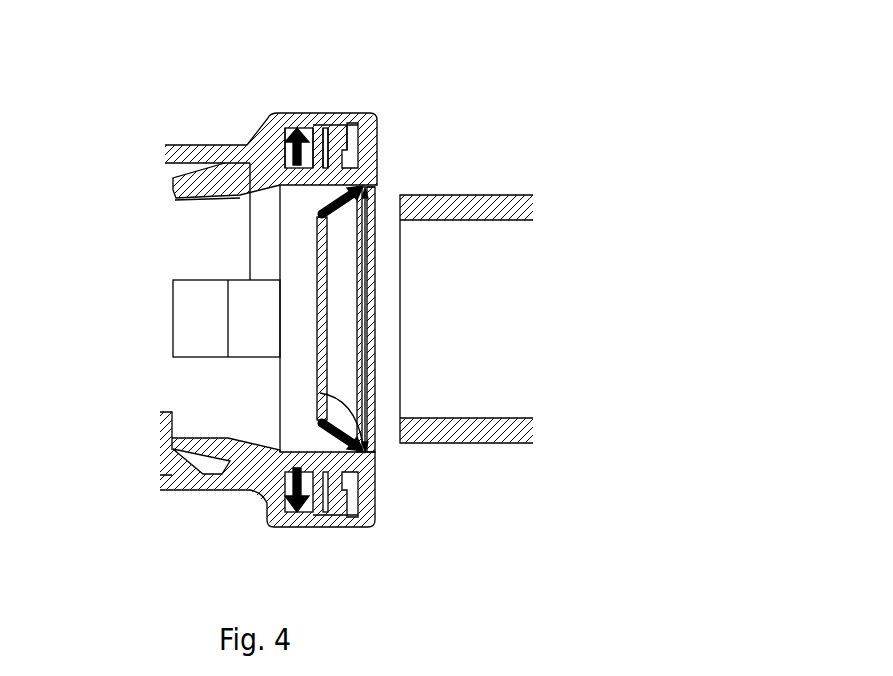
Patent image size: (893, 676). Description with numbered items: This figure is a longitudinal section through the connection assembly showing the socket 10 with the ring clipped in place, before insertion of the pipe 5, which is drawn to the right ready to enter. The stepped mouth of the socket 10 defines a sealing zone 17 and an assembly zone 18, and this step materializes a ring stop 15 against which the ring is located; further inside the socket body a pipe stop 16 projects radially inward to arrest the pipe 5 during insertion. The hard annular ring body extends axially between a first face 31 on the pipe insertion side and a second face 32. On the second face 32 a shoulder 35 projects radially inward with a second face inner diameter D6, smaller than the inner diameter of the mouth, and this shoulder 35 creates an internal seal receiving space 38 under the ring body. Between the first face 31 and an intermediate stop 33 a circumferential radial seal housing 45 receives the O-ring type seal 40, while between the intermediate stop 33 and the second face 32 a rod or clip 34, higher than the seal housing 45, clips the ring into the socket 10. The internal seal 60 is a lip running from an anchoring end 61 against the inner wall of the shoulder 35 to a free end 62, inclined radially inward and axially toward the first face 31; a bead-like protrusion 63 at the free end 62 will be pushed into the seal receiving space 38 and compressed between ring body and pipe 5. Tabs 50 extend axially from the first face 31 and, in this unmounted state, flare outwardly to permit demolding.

The pipe 5 is at (520, 195).
The socket 10 is at (165, 146).
The ring stop 15 is at (280, 145).
The pipe stop 16 is at (168, 431).
The sealing zone 17 is at (298, 515).
The assembly zone 18 is at (340, 518).
The first face 31 is at (285, 158).
The second face 32 is at (380, 120).
The intermediate stop 33 is at (322, 125).
The rod or clip 34 is at (340, 130).
The shoulder 35 is at (362, 192).
The internal seal receiving space 38 is at (200, 198).
The circumferential O-ring type seal 40 is at (297, 120).
The circumferential radial seal housing 45 is at (283, 135).
The tabs 50 is at (203, 457).
The internal seal 60 is at (345, 322).
The anchoring end 61 is at (362, 190).
The free end 62 is at (320, 277).
The bead-like protrusion 63 is at (358, 455).
The second face inner diameter D6 is at (366, 320).